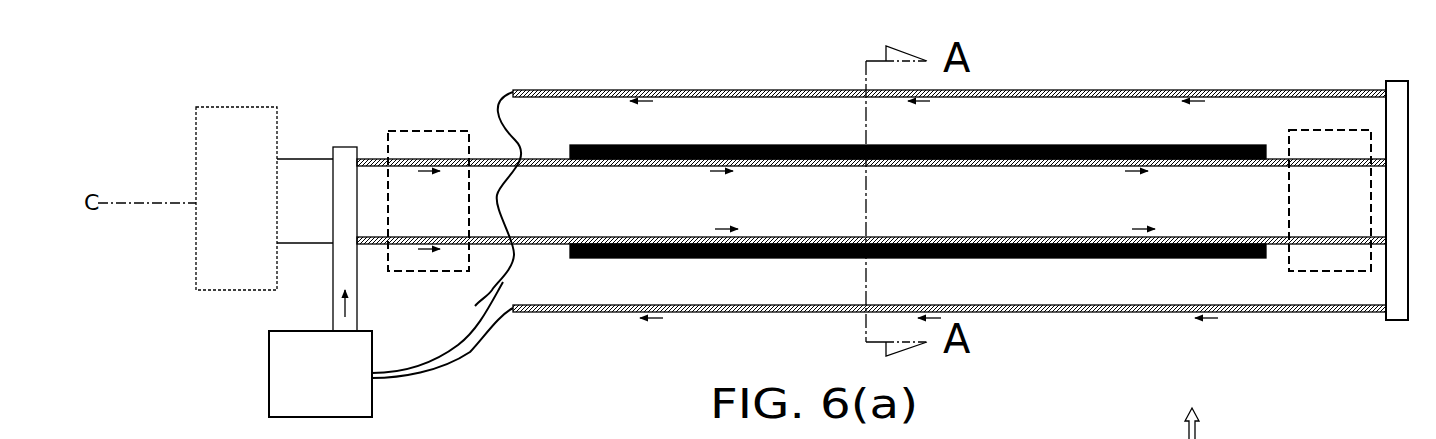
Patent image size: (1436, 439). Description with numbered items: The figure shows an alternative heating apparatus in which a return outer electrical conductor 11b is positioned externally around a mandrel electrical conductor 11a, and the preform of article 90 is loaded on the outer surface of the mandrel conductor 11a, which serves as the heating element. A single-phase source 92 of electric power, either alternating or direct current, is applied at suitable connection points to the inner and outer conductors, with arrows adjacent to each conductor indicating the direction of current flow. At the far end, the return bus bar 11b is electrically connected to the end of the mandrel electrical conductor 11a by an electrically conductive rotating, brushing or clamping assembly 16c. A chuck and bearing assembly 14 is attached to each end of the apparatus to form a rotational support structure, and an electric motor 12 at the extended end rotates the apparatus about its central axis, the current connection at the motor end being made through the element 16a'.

The electric motor 12 is at (249, 213).
The rotary seal block 16a' is at (342, 198).
The single-phase source of electric power 92 is at (326, 383).
The mandrel electrical conductor 11a is at (552, 158).
The return outer electrical conductor 11b is at (726, 90).
The preform of article 90 is at (1058, 146).
The chuck and bearing assembly 14 is at (458, 138).
The electrically conductive rotating, brushing or clamping assembly 16c is at (1398, 88).